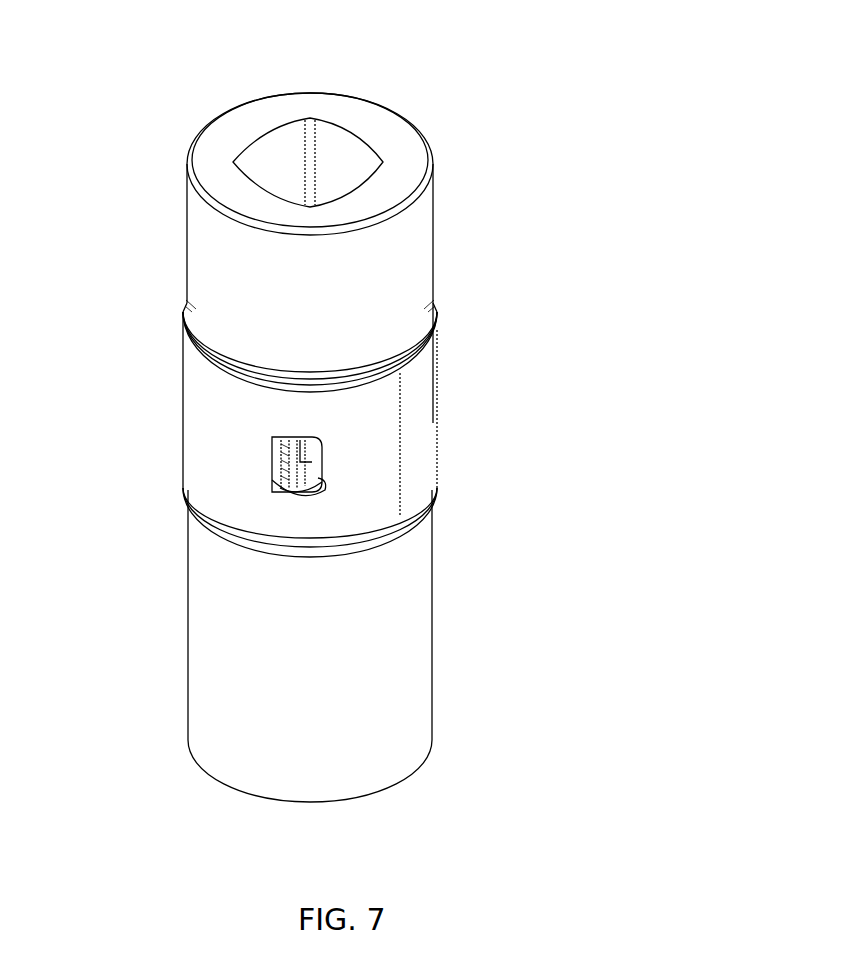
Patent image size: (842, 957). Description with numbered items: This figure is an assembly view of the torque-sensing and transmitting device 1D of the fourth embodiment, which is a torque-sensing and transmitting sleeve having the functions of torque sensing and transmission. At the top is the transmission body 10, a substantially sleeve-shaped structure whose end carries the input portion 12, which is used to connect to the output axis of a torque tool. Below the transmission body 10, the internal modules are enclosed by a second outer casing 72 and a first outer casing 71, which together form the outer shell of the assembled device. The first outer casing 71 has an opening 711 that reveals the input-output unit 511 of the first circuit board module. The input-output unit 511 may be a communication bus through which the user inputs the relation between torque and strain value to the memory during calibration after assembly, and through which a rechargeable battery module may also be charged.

The torque-sensing and transmitting device 1D is at (562, 153).
The transmission body 10 is at (418, 267).
The input portion 12 is at (392, 138).
The second outer casing 72 is at (427, 443).
The first outer casing 71 is at (220, 437).
The input-output unit 511 is at (270, 480).
The opening 711 is at (303, 493).